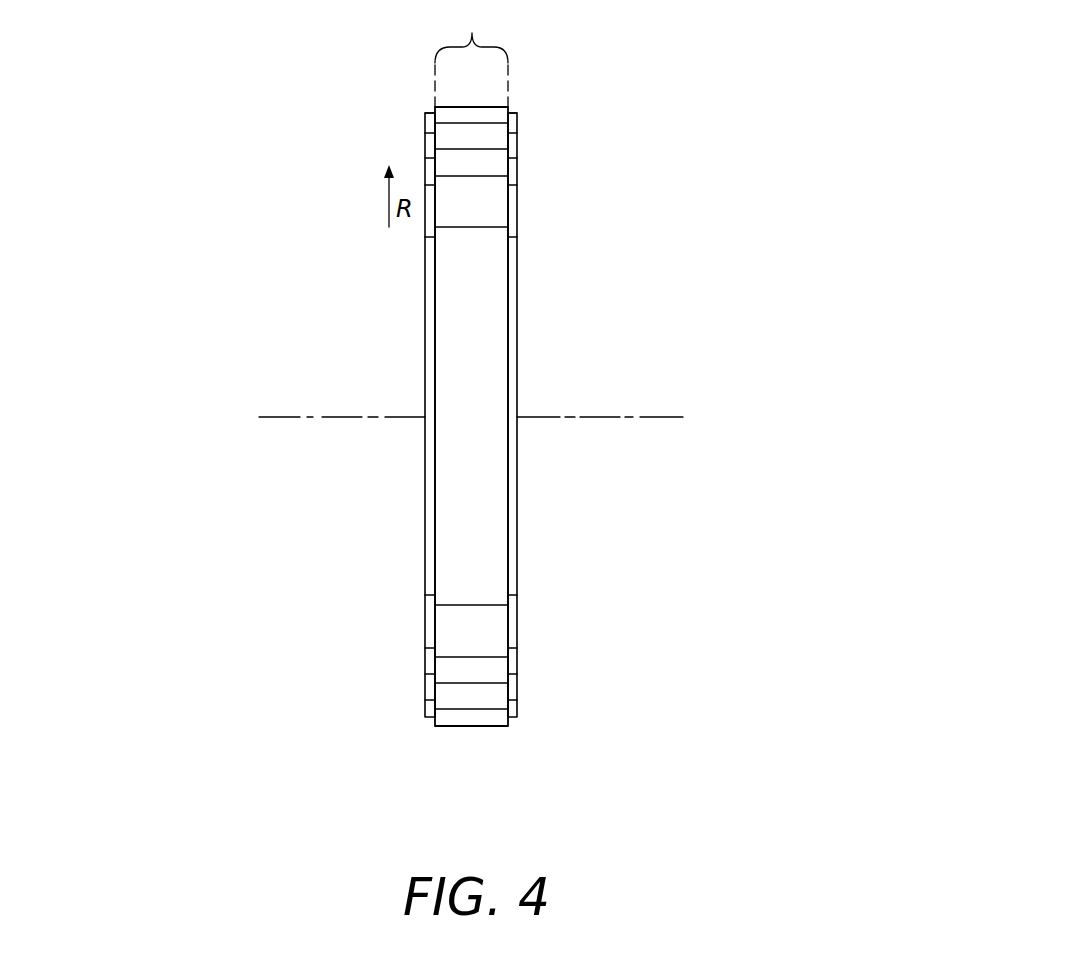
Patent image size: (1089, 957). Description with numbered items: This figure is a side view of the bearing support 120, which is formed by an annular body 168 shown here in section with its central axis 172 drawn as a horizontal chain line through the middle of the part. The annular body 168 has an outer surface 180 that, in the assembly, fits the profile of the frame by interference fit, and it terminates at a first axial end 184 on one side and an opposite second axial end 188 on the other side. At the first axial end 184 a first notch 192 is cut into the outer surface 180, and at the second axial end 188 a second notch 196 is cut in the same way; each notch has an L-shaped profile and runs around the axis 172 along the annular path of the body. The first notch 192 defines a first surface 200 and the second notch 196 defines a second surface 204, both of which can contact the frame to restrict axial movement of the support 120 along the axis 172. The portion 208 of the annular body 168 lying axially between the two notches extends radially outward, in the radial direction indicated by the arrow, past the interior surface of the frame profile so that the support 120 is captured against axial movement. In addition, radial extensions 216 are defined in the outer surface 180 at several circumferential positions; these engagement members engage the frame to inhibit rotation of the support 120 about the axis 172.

The support 120 is at (1018, 122).
The annular body 168 is at (497, 465).
The axis 172 is at (665, 418).
The outer surface 180 is at (485, 415).
The first axial end 184 is at (416, 275).
The second axial end 188 is at (528, 296).
The first notch 192 is at (424, 113).
The second notch 196 is at (518, 113).
The first surface 200 is at (434, 107).
The second surface 204 is at (509, 107).
The portion 208 is at (471, 57).
The radial extensions 216 is at (470, 107).